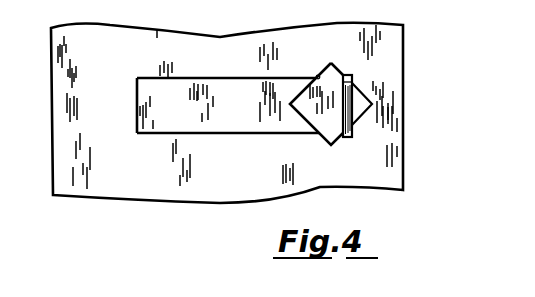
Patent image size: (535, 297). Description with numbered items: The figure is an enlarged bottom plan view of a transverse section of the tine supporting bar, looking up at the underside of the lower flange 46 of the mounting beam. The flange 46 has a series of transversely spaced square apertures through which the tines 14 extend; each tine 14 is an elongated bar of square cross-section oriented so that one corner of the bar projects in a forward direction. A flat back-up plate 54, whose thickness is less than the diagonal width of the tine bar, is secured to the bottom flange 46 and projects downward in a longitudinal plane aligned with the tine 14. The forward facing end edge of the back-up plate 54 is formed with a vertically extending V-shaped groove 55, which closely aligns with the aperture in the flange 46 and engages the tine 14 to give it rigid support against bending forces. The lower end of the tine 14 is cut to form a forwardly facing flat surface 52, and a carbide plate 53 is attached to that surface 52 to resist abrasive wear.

The flange 46 is at (377, 43).
The back-up plate 54 is at (188, 82).
The tine 14 is at (331, 131).
The V-shaped groove 55 is at (318, 75).
The flat surface 52 is at (352, 84).
The carbide plate 53 is at (353, 133).